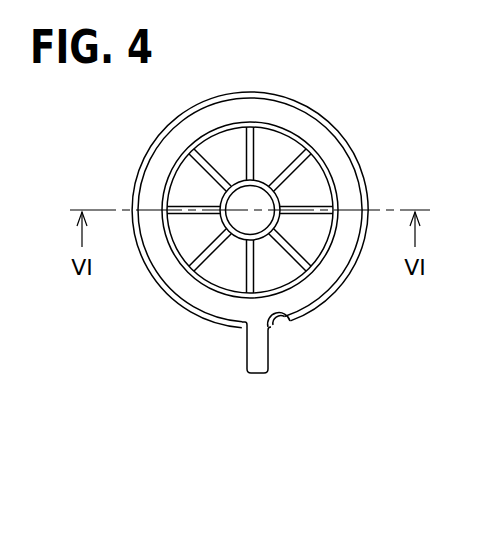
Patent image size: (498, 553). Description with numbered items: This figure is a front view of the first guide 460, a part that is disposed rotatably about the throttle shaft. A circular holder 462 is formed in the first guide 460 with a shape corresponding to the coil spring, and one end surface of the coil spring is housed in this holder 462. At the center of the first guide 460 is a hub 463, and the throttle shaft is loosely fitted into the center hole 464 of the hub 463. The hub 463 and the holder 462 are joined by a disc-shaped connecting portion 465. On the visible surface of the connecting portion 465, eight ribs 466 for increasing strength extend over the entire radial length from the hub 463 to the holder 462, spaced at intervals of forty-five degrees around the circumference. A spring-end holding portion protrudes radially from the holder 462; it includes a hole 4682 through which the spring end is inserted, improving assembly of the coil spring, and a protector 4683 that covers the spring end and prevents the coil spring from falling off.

The first guide 460 is at (318, 112).
The holder 462 is at (338, 162).
The hub 463 is at (223, 198).
The center hole 464 is at (229, 226).
The connecting portion 465 is at (276, 142).
The ribs 466 is at (303, 253).
The hole 4682 is at (283, 319).
The protector 4683 is at (265, 362).